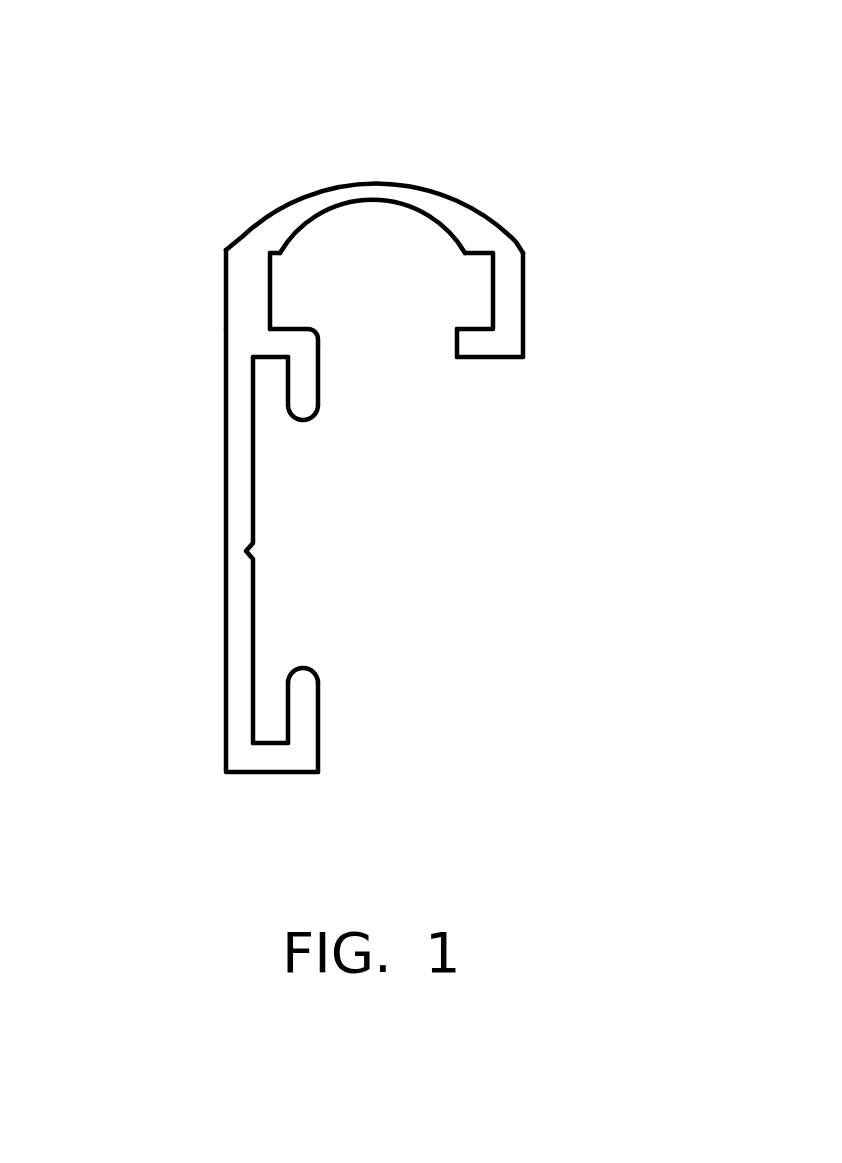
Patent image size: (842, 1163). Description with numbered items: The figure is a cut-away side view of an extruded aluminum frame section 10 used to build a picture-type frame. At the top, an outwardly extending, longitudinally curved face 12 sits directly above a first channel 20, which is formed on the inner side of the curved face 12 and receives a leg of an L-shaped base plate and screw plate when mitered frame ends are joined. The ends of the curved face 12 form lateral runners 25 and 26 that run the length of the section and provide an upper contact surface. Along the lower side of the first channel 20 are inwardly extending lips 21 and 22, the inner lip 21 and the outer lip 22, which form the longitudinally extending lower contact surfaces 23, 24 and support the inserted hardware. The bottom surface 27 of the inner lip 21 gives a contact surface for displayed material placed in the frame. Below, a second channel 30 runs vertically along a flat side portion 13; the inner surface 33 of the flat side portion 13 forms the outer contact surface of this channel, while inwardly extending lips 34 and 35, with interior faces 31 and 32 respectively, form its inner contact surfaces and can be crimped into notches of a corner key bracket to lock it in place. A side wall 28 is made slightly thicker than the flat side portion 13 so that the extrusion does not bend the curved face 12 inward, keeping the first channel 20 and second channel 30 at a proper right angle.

The frame section 10 is at (234, 134).
The curved face 12 is at (403, 183).
The flat side portion 13 is at (232, 584).
The first channel 20 is at (375, 233).
The inner inwardly extending lip 21 is at (472, 343).
The outer inwardly extending lip 22 is at (307, 353).
The lower contact surface 23 is at (490, 327).
The lower contact surface 24 is at (287, 335).
The lateral runner 25 is at (483, 253).
The lateral runner 26 is at (277, 254).
The bottom surface 27 is at (480, 356).
The side wall 28 is at (247, 290).
The second channel 30 is at (273, 662).
The interior face 31 is at (288, 713).
The interior face 32 is at (285, 386).
The inner surface 33 is at (255, 493).
The inwardly extending lip 34 is at (303, 702).
The inwardly extending lip 35 is at (303, 408).